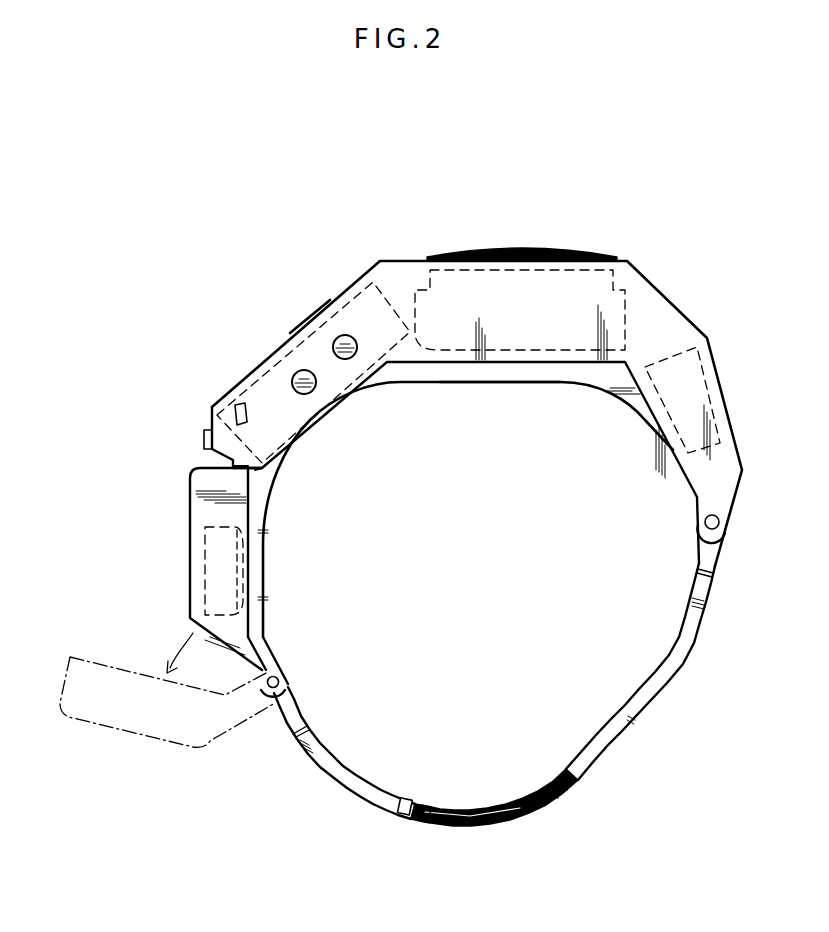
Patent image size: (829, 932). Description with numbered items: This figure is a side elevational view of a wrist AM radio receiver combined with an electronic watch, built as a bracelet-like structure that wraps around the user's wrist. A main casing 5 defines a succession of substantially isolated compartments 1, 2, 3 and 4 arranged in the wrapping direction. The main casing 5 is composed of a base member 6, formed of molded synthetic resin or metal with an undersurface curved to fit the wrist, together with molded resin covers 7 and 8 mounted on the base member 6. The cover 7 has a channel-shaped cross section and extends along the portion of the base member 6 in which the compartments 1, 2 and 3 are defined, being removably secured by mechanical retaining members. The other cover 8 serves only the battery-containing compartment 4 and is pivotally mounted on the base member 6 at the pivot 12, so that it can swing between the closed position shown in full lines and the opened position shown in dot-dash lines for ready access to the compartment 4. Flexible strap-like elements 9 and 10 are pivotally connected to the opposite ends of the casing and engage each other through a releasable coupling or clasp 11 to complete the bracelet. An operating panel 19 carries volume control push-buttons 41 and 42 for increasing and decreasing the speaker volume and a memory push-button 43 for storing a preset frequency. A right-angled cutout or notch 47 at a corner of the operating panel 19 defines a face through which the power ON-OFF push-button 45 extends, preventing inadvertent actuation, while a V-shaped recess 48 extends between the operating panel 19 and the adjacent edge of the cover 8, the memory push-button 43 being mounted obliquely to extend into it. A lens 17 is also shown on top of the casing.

The compartment 1 is at (690, 345).
The compartment 2 is at (618, 272).
The compartment 3 is at (343, 292).
The compartment 4 is at (203, 542).
The main casing 5 is at (413, 398).
The base member 6 is at (518, 383).
The cover 7 is at (409, 260).
The cover 8 is at (190, 600).
The flexible strap-like element 9 is at (346, 781).
The flexible strap-like element 10 is at (680, 655).
The releasable coupling or clasp 11 is at (503, 816).
The pivotal mounting 12 is at (284, 678).
The lens 17 is at (525, 256).
The operating panel 19 is at (290, 333).
The volume control push-button 41 is at (337, 343).
The volume control push-button 42 is at (300, 381).
The memory push-button 43 is at (204, 438).
The power ON-OFF push-button 45 is at (235, 411).
The right-angled cutout or notch 47 is at (257, 472).
The V-shaped recess 48 is at (235, 463).